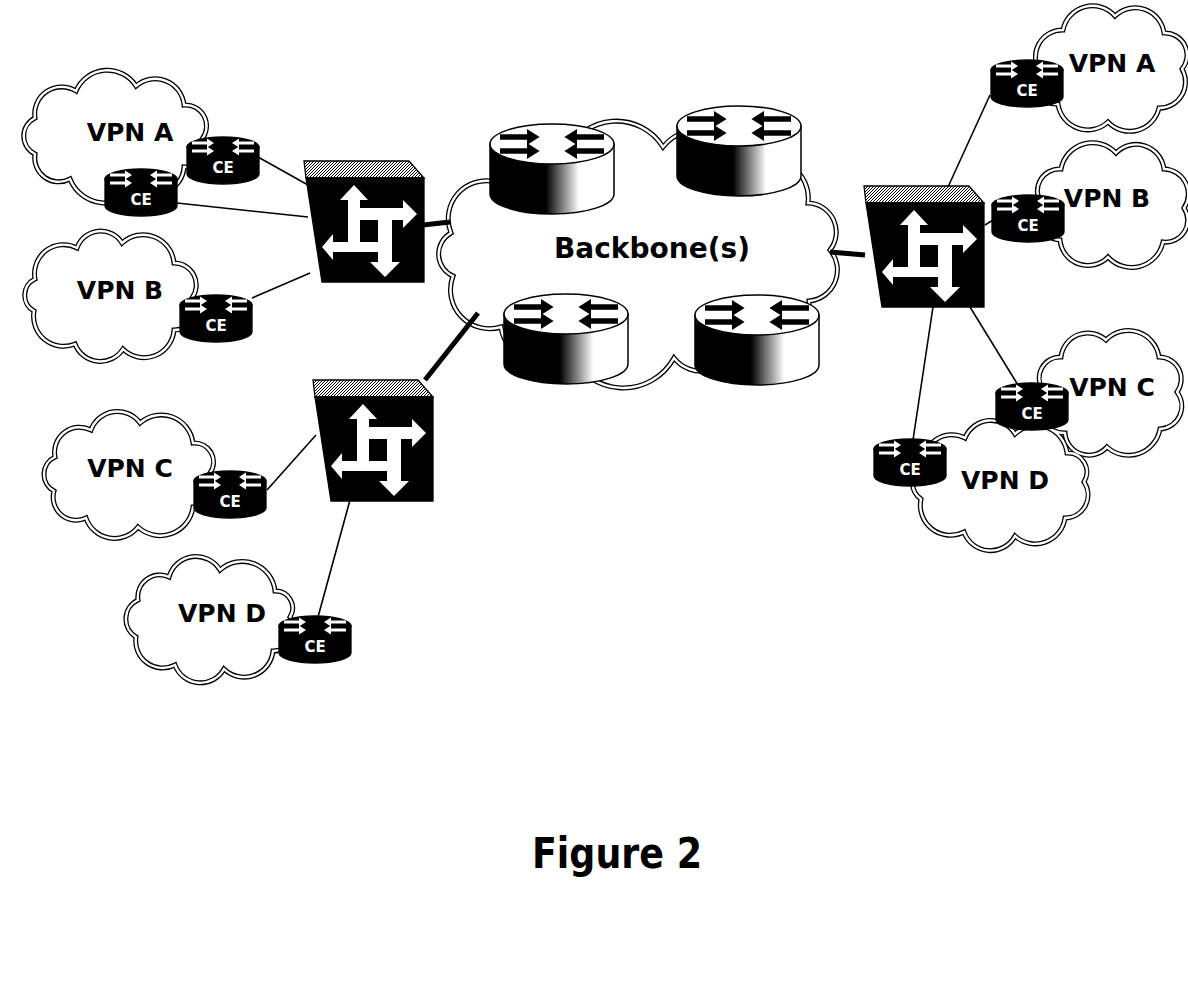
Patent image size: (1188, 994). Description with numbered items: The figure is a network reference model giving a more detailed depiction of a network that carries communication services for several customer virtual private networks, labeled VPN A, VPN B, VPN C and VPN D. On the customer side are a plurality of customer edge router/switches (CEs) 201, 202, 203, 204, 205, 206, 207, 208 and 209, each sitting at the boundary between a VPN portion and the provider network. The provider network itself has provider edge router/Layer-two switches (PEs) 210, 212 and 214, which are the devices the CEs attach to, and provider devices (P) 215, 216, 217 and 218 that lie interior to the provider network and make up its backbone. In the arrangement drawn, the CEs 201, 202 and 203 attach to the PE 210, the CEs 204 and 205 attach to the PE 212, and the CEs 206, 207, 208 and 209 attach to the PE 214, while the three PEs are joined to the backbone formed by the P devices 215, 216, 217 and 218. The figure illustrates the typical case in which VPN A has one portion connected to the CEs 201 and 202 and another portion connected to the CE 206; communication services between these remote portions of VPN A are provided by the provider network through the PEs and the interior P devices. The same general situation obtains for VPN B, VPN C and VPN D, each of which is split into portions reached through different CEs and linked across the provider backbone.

The customer edge router/switch 201 is at (242, 137).
The customer edge router/switch 202 is at (105, 205).
The customer edge router/switch 203 is at (217, 295).
The customer edge router/switch 204 is at (240, 472).
The customer edge router/switch 205 is at (345, 617).
The customer edge router/switch 206 is at (992, 63).
The customer edge router/switch 207 is at (1022, 195).
The customer edge router/switch 208 is at (1020, 385).
The customer edge router/switch 209 is at (873, 472).
The provider edge router/Layer-2 switch 210 is at (397, 162).
The provider edge router/Layer-2 switch 212 is at (390, 378).
The provider edge router/Layer-2 switch 214 is at (882, 187).
The provider device 215 is at (575, 127).
The provider device 216 is at (780, 107).
The provider device 217 is at (590, 382).
The provider device 218 is at (718, 380).